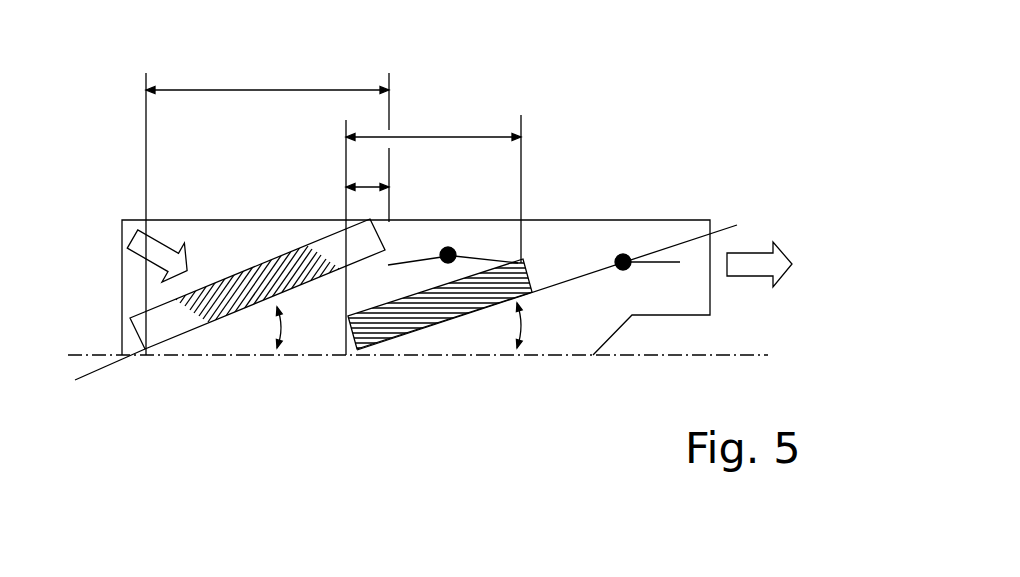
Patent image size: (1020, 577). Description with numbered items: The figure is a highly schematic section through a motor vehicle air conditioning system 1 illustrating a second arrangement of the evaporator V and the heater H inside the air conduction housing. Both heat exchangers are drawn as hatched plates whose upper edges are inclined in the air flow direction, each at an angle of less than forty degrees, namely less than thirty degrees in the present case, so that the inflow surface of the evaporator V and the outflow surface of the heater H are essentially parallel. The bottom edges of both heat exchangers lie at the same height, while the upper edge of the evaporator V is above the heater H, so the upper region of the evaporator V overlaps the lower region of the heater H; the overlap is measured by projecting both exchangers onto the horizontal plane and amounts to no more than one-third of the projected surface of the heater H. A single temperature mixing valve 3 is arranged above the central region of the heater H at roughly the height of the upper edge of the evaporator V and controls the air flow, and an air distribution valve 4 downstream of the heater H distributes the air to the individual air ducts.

The motor vehicle air conditioning system 1 is at (242, 452).
The temperature mixing valve 3 is at (448, 247).
The air distribution valve 4 is at (628, 254).
The evaporator V is at (253, 277).
The heater H is at (392, 323).